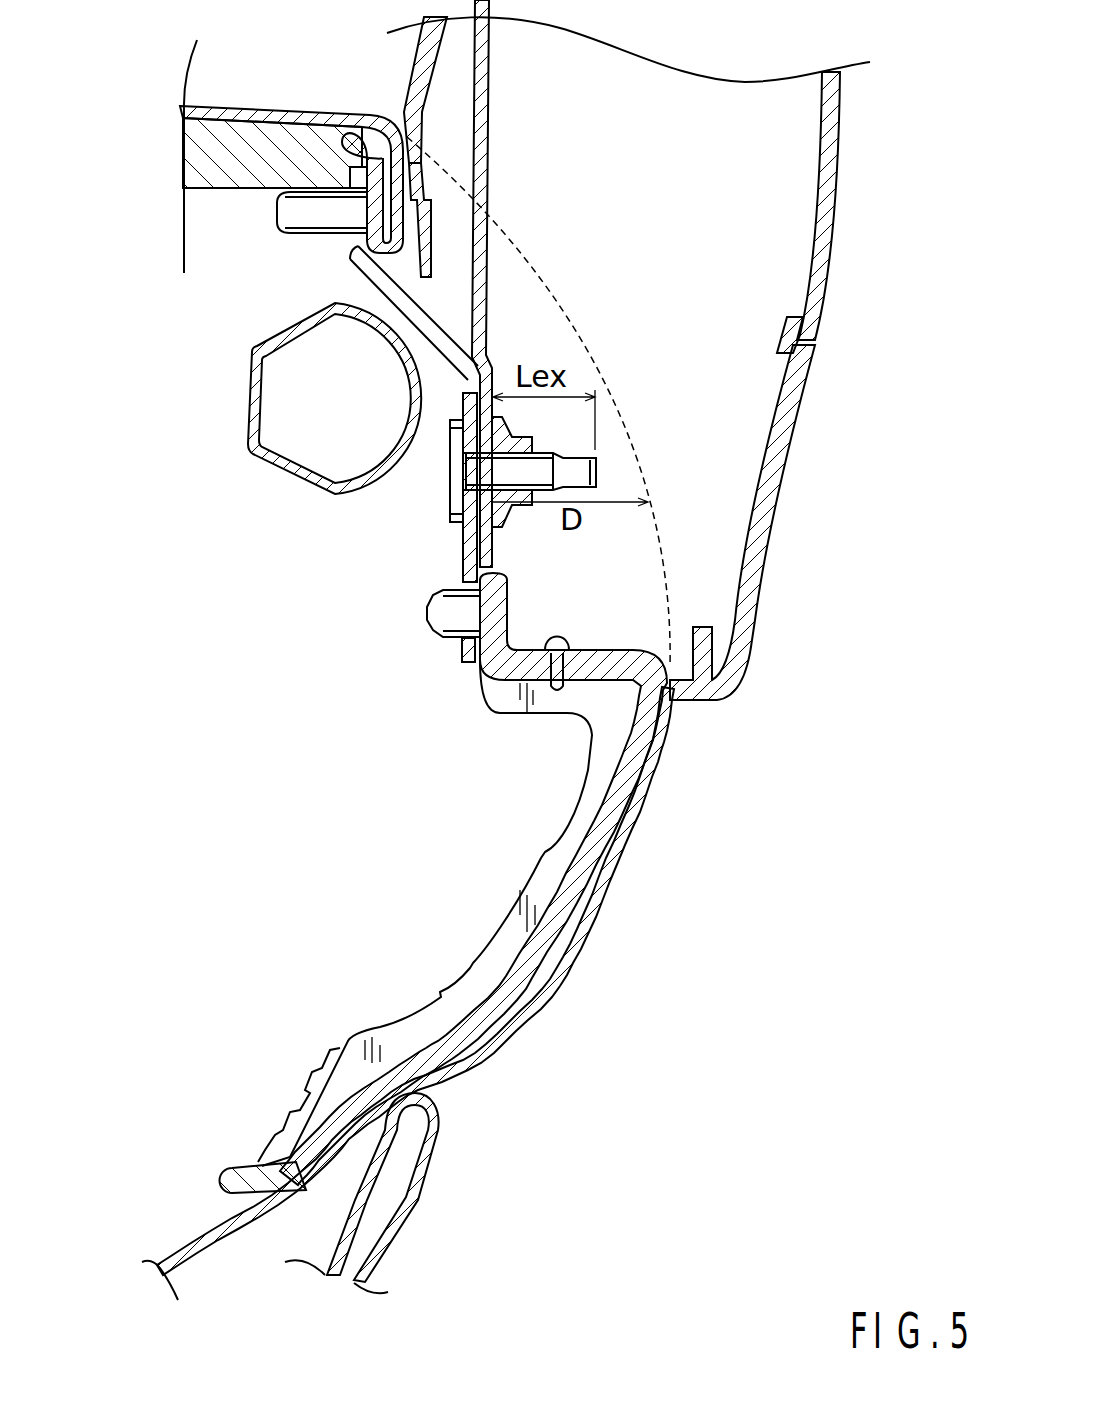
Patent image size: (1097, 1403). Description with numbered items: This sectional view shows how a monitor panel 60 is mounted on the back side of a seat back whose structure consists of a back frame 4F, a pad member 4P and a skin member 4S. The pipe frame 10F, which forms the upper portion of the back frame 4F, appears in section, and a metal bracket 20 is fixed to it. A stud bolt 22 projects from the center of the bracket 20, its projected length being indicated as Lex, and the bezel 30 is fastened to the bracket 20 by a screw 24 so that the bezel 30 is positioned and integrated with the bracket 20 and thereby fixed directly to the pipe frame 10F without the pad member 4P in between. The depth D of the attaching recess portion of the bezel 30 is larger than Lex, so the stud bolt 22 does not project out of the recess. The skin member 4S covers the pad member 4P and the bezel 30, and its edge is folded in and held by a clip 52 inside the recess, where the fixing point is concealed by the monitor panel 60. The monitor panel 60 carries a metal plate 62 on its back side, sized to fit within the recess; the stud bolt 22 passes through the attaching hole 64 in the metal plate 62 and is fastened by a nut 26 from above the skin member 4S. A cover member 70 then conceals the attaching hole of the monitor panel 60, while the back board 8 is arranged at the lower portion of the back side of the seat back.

The pad member 4P is at (230, 150).
The skin member 4S is at (310, 120).
The back frame 4F is at (252, 405).
The pipe frame 10F is at (238, 398).
The back board 8 is at (410, 1233).
The bracket 20 is at (455, 562).
The stud bolt 22 is at (487, 480).
The screw 24 is at (283, 210).
The nut 26 is at (505, 515).
The bezel 30 is at (360, 266).
The clip 52 is at (507, 673).
The monitor panel 60 is at (846, 197).
The metal plate 62 is at (487, 124).
The attaching hole 64 is at (505, 472).
The cover member 70 is at (792, 494).